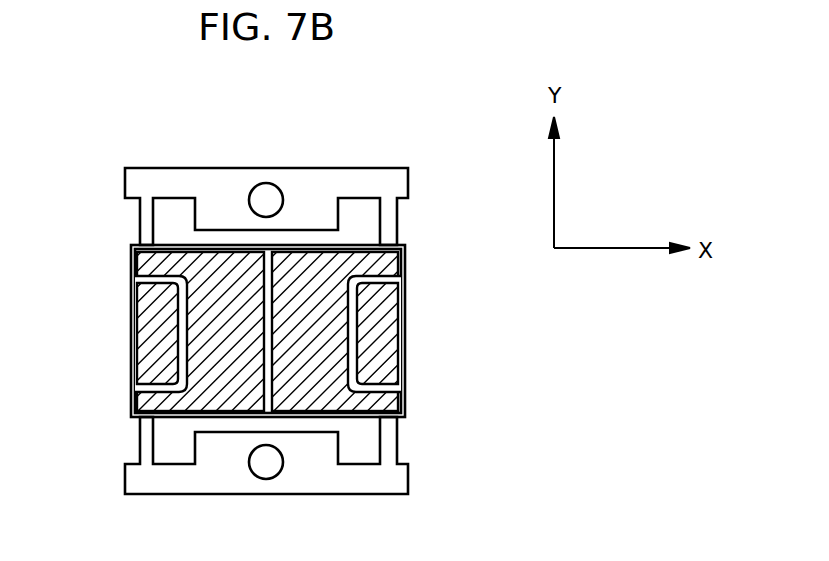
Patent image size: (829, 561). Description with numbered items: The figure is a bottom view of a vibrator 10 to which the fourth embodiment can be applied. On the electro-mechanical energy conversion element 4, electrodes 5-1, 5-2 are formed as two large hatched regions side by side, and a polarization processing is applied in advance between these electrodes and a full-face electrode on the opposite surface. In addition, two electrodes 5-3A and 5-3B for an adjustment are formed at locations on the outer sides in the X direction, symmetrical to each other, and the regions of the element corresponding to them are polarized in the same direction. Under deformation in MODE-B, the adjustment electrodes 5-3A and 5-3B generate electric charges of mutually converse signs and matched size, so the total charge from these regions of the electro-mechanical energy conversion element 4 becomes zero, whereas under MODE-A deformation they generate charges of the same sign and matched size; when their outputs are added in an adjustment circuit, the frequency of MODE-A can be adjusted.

The coil component / reactor 10 is at (138, 125).
The electro-mechanical energy conversion element 4 is at (130, 280).
The electrode 5-1 is at (203, 361).
The electrode 5-2 is at (323, 359).
The electrode for adjustment 5-3A is at (157, 338).
The electrode for adjustment 5-3B is at (382, 309).